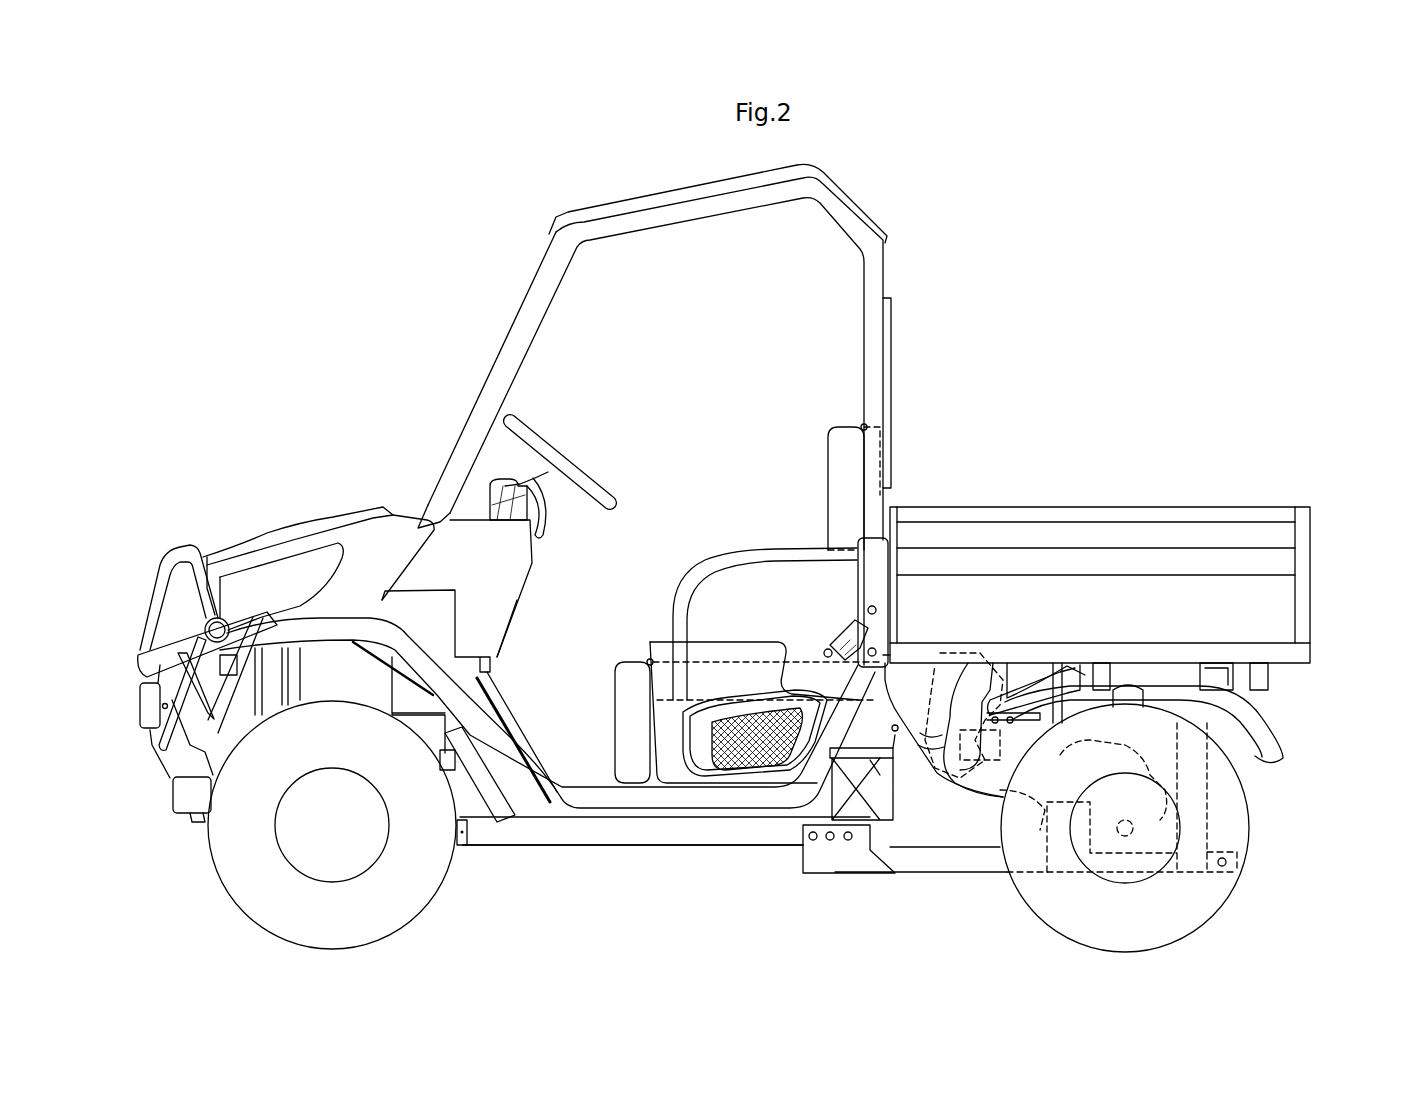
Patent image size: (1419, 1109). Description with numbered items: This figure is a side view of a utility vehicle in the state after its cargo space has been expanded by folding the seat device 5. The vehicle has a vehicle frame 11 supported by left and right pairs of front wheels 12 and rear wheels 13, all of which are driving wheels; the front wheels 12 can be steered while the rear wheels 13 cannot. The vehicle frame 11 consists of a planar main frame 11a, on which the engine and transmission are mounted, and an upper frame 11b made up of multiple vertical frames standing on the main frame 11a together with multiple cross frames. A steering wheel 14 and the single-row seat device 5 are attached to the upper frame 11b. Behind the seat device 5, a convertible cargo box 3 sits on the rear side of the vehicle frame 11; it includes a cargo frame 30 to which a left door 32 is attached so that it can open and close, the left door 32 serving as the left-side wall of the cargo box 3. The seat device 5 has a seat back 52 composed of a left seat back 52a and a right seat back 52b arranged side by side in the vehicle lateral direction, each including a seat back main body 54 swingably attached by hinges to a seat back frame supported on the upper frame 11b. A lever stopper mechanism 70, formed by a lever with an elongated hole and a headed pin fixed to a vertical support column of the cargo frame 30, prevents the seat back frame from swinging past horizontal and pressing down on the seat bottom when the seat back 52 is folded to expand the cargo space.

The cargo box 3 is at (1127, 573).
The seat device 5 is at (736, 538).
The vehicle frame 11 is at (631, 852).
The main frame 11a is at (722, 835).
The upper frame 11b is at (571, 790).
The front wheels 12 is at (433, 898).
The rear wheels 13 is at (1230, 898).
The steering wheel 14 is at (563, 458).
The cargo frame 30 is at (1305, 577).
The left door 32 is at (1225, 515).
The seat back 52 is at (722, 593).
The left seat back 52a is at (818, 490).
The right seat back 52b is at (627, 645).
The seat back main body 54 is at (843, 457).
The lever stopper mechanism 70 is at (843, 630).